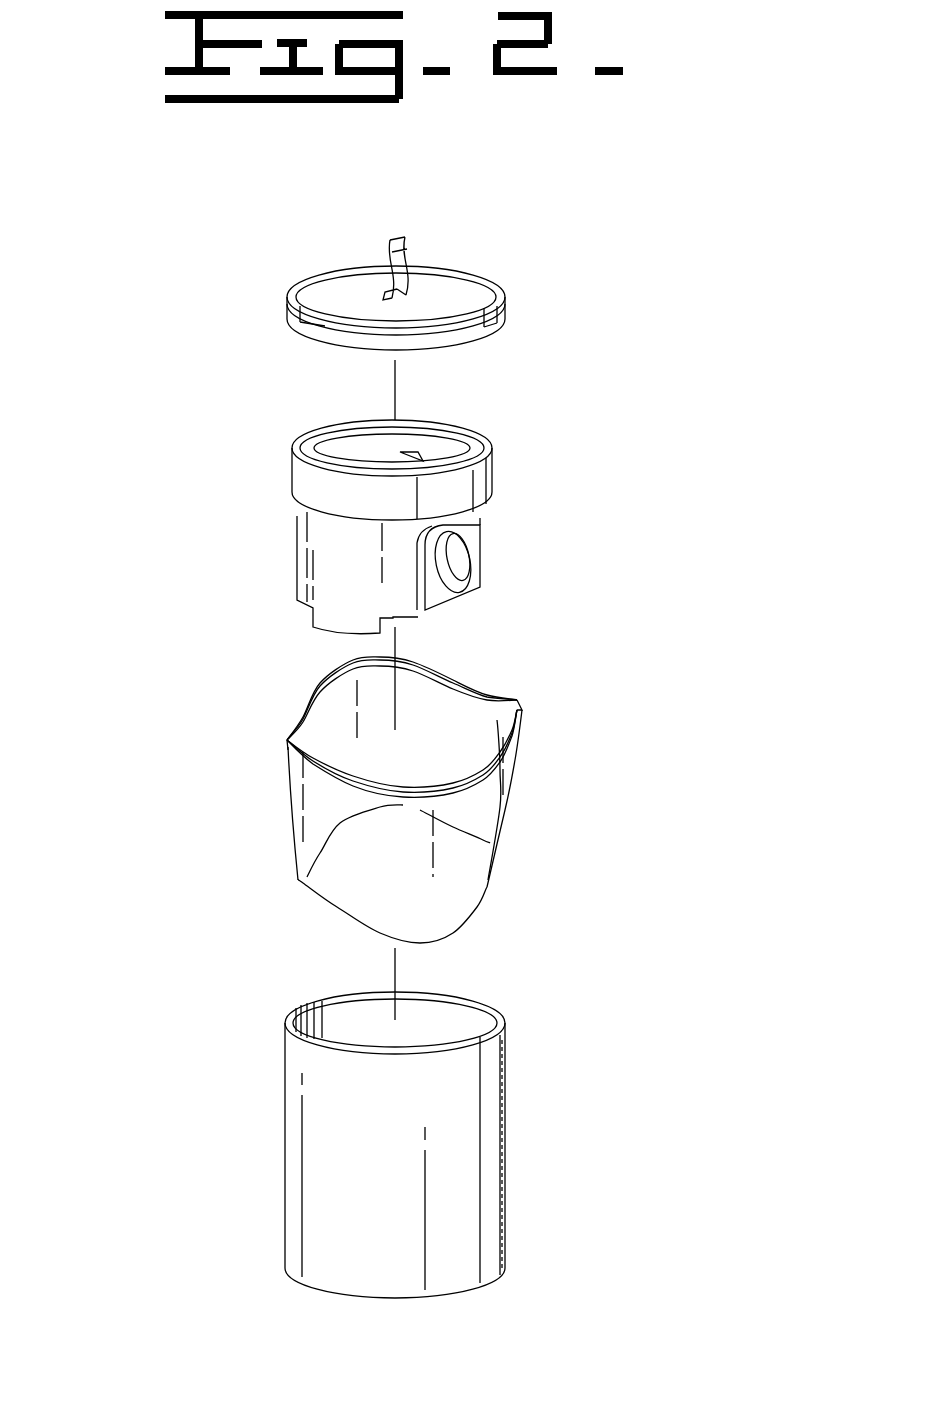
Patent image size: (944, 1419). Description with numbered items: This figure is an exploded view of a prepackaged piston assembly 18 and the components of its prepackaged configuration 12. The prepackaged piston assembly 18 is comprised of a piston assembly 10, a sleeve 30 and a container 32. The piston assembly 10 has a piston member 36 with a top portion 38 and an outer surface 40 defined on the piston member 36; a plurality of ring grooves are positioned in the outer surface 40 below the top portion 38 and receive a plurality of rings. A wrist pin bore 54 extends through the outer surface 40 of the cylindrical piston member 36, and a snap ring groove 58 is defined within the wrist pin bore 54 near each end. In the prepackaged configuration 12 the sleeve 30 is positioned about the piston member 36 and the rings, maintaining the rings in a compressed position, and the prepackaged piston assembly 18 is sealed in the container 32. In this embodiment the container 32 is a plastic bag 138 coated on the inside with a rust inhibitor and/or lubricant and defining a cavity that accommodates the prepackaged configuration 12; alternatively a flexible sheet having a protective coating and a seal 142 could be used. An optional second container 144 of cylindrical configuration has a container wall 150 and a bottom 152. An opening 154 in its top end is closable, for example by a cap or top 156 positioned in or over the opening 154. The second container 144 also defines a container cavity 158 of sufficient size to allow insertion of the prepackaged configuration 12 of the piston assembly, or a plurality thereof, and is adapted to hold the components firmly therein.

The piston assembly 10 is at (627, 464).
The prepackaged configuration 12 is at (127, 246).
The prepackaged piston assembly 18 is at (661, 215).
The sleeve 30 is at (298, 475).
The container 32 is at (412, 811).
The piston member 36 is at (403, 605).
The top portion 38 is at (483, 440).
The outer surface 40 is at (320, 573).
The wrist pin bore 54 is at (472, 573).
The snap ring groove 58 is at (472, 555).
The plastic bag 138 is at (307, 842).
The seal 142 is at (402, 236).
The second container 144 is at (426, 1160).
The container wall 150 is at (285, 1147).
The bottom 152 is at (397, 1296).
The opening 154 is at (287, 683).
The cap 156 is at (350, 287).
The container cavity 158 is at (456, 717).